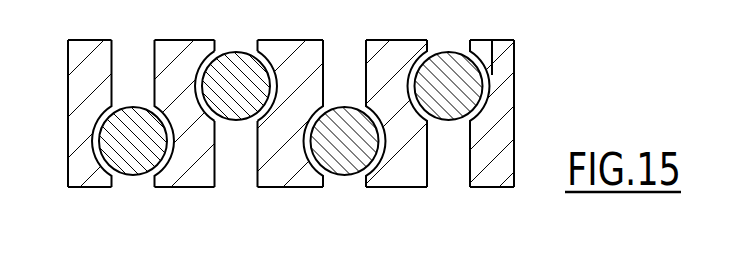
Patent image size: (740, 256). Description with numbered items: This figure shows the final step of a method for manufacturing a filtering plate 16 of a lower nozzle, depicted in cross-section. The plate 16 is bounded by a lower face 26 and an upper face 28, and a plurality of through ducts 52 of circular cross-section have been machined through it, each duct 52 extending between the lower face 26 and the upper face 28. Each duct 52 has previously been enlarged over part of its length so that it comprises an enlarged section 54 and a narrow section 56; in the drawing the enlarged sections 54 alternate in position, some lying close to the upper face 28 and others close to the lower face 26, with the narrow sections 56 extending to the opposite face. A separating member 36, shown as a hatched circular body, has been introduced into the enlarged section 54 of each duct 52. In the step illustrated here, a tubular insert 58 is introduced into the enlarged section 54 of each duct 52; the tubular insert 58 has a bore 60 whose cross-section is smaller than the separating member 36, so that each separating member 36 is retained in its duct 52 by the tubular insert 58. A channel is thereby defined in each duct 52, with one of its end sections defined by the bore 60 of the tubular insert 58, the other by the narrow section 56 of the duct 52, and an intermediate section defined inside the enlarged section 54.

The filtering plate 16 is at (82, 82).
The lower face 26 is at (491, 190).
The upper face 28 is at (505, 40).
The separating member 36 is at (261, 78).
The through duct 52 is at (136, 60).
The enlarged section 54 is at (201, 84).
The narrow section 56 is at (235, 172).
The tubular insert 58 is at (209, 47).
The bore 60 is at (259, 44).